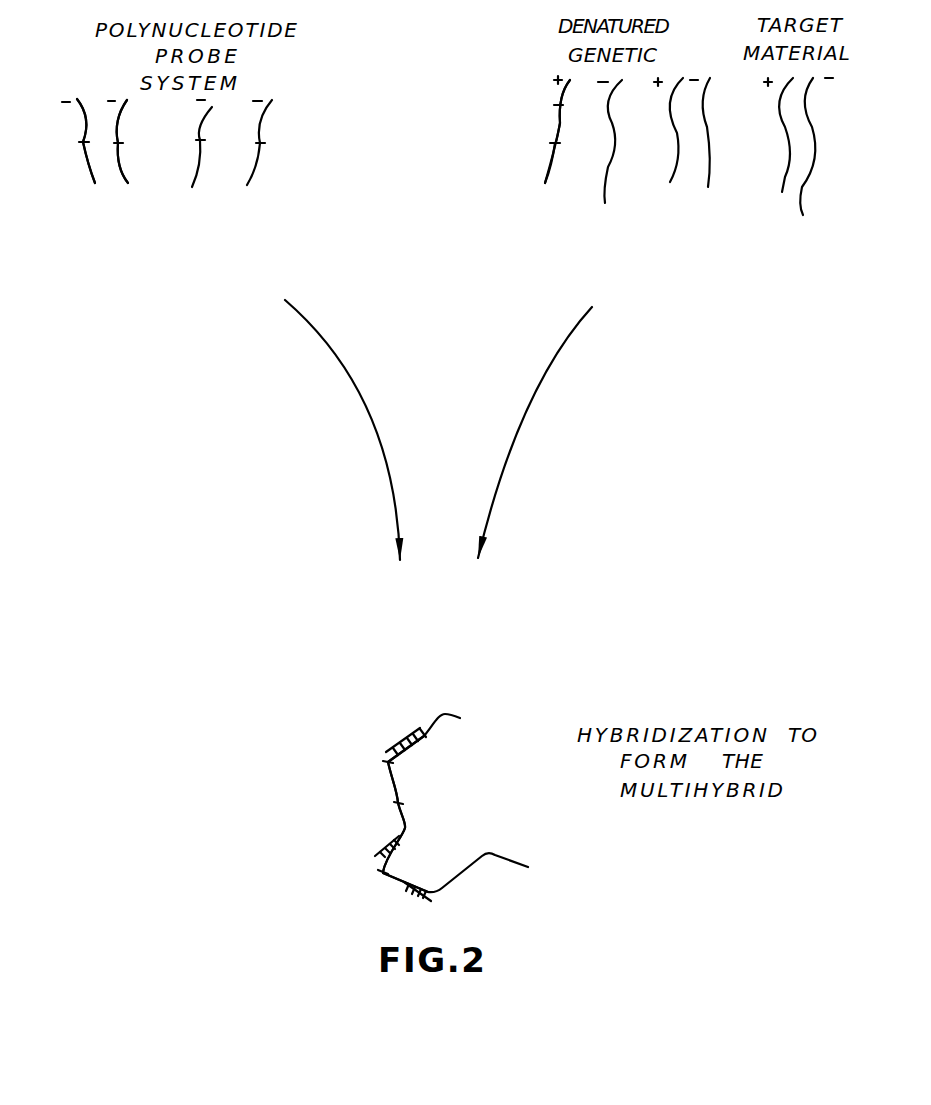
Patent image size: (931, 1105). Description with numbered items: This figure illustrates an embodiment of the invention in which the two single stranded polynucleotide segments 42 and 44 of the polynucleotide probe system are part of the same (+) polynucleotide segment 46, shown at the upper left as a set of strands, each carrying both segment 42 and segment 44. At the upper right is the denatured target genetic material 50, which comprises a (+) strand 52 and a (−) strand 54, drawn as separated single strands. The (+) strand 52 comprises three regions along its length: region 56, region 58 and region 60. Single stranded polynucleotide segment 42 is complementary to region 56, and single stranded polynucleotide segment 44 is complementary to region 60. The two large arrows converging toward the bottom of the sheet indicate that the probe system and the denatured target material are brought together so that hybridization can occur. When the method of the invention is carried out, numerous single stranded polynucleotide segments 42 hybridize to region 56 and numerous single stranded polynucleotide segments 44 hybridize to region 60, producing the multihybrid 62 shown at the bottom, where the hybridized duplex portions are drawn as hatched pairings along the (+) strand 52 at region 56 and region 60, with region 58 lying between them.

The single stranded polynucleotide segment 42 is at (80, 122).
The single stranded polynucleotide segment 44 is at (82, 167).
The (+) polynucleotide segment 46 is at (277, 167).
The denatured target genetic material 50 is at (688, 277).
The (+) strand 52 is at (545, 187).
The (−) strand 54 is at (608, 205).
The region 56 is at (555, 95).
The region 58 is at (555, 125).
The region 60 is at (542, 162).
The multihybrid 62 is at (345, 805).